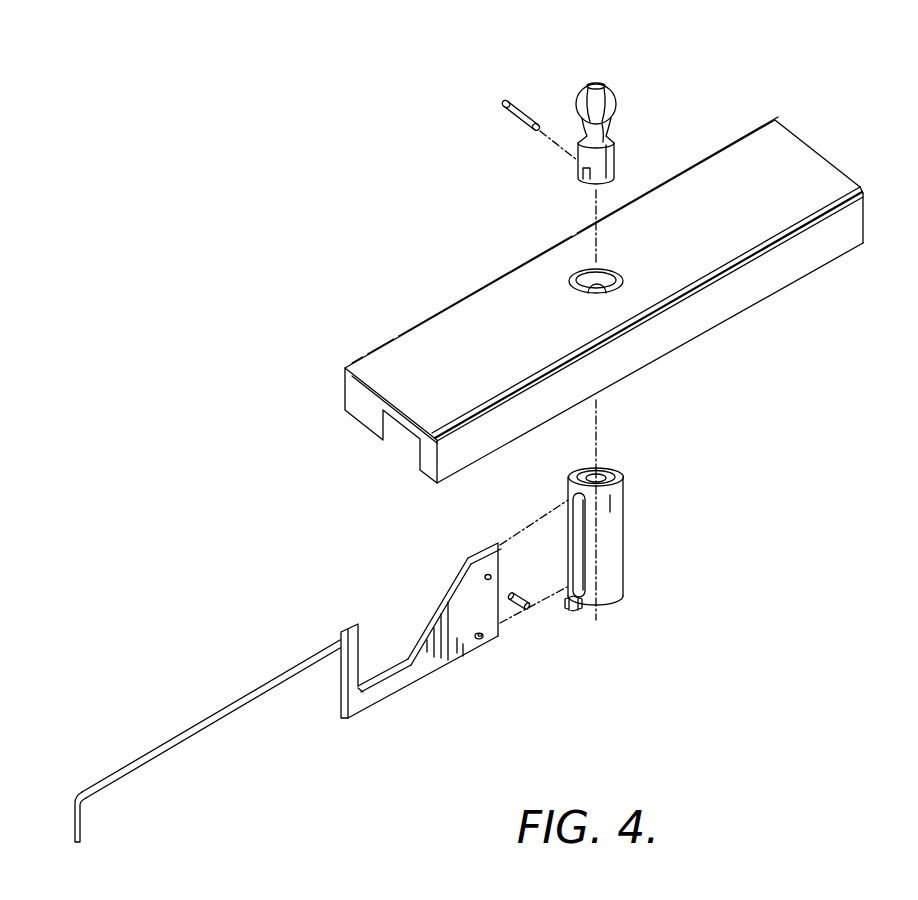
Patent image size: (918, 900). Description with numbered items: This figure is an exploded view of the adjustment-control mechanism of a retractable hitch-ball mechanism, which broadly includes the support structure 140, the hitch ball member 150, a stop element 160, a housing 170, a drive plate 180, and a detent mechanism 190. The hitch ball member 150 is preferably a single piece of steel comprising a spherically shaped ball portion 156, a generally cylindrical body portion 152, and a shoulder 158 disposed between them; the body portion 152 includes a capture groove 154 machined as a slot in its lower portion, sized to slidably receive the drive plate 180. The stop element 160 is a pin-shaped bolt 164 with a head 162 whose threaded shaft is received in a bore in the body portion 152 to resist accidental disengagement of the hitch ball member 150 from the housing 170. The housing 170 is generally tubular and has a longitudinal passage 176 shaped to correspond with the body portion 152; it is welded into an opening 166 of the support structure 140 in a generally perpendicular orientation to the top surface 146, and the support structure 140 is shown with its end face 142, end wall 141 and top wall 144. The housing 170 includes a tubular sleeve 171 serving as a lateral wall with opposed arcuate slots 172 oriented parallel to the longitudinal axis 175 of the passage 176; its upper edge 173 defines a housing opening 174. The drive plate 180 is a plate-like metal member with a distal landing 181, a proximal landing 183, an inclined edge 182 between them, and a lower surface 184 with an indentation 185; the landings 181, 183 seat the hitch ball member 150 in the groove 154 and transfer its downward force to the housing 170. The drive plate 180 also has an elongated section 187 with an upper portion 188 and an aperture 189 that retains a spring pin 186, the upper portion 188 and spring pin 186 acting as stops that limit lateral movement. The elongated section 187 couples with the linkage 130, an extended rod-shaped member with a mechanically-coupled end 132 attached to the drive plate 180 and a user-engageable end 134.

The linkage 130 is at (186, 756).
The mechanically-coupled end 132 is at (316, 652).
The user-engageable end 134 is at (70, 832).
The support structure 140 is at (600, 266).
The end wall of rail 141 is at (791, 132).
The end face with slot 142 is at (364, 404).
The top wall of rail 144 is at (418, 366).
The top surface 146 is at (820, 167).
The hitch ball member 150 is at (604, 115).
The body portion 152 is at (618, 162).
The capture groove 154 is at (587, 178).
The ball portion 156 is at (613, 102).
The shoulder 158 is at (609, 134).
The stop element 160 is at (513, 119).
The head 162 is at (509, 103).
The bolt 164 is at (538, 118).
The opening 166 is at (592, 286).
The housing 170 is at (611, 530).
The tubular sleeve 171 is at (625, 543).
The arcuate slots 172 is at (579, 539).
The upper edge 173 is at (617, 464).
The housing opening 174 is at (573, 470).
The longitudinal axis 175 is at (600, 621).
The passage 176 is at (601, 466).
The drive plate 180 is at (426, 612).
The distal landing 181 is at (478, 552).
The inclined edge 182 is at (444, 600).
The proximal landing 183 is at (383, 674).
The lower surface 184 is at (824, 250).
The indentation 185 is at (487, 636).
The spring pin 186 is at (520, 596).
The elongated section 187 is at (350, 700).
The upper portion 188 is at (347, 628).
The aperture 189 is at (501, 558).
The detent mechanism 190 is at (573, 613).